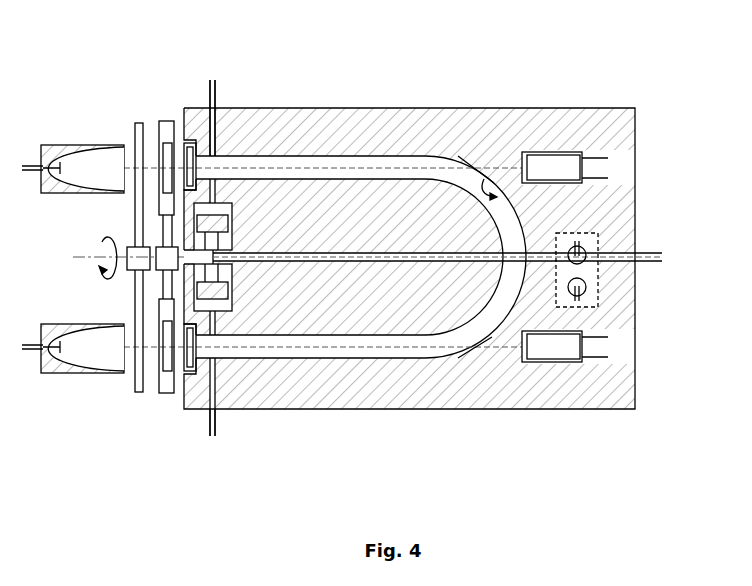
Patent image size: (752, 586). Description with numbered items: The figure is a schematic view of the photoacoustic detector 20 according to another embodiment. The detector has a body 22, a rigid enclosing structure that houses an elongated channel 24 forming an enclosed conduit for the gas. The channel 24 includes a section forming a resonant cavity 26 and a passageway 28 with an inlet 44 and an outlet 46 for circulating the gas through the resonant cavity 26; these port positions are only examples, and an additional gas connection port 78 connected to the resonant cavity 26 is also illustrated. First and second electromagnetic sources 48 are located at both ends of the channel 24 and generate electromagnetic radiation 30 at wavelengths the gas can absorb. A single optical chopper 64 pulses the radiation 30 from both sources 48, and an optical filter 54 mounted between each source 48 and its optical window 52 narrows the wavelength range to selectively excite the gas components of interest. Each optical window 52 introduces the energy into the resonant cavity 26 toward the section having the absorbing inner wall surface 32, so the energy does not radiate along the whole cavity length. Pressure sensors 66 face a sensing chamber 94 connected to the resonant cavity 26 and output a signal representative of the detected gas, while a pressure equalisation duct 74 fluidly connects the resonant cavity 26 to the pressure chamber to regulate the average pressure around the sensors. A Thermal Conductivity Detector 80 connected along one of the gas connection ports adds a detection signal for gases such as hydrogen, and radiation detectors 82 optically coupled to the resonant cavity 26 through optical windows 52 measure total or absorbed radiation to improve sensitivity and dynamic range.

The photoacoustic detector 20 is at (660, 78).
The body 22 is at (305, 409).
The elongated channel 24 is at (214, 132).
The resonant cavity 26 is at (290, 160).
The passageway 28 is at (214, 80).
The electromagnetic radiation 30 is at (380, 167).
The absorbing inner wall surface 32 is at (494, 182).
The inlet 44 is at (216, 418).
The outlet 46 is at (208, 92).
The electromagnetic source 48 is at (53, 148).
The optical window 52 is at (473, 160).
The optical filter 54 is at (166, 158).
The optical chopper 64 is at (135, 128).
The pressure sensor 66 is at (203, 224).
The pressure equalisation duct 74 is at (390, 261).
The gas connection port 78 is at (647, 266).
The Thermal Conductivity Detector (TCD) 80 is at (592, 242).
The radiation detector 82 is at (538, 162).
The sensing chamber 94 is at (220, 208).